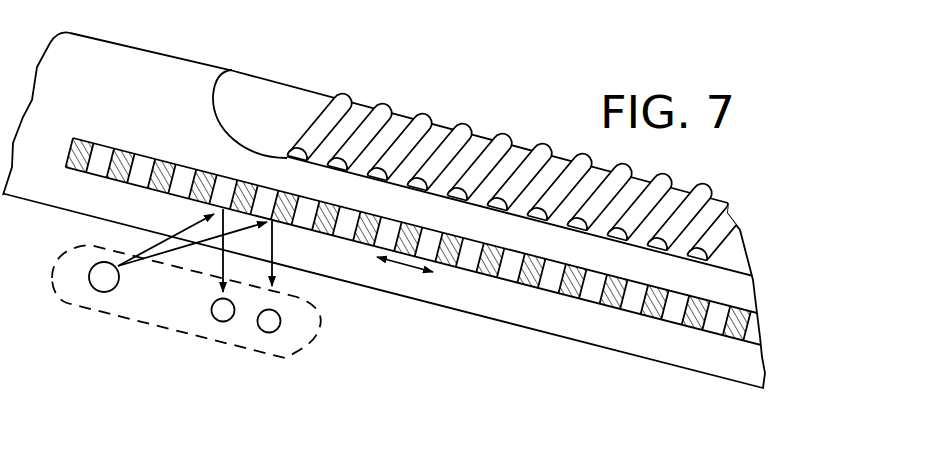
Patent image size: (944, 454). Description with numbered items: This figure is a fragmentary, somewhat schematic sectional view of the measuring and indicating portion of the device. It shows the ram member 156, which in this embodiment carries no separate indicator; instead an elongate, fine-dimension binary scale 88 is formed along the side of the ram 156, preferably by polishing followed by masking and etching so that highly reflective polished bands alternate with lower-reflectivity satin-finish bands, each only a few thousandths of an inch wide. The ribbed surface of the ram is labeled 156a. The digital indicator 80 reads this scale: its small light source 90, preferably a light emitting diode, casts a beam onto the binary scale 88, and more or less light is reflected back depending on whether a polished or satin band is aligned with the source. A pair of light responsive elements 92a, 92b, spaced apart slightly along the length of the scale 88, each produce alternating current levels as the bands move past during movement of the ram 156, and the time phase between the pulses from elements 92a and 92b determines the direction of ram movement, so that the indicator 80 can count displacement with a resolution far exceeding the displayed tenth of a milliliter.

The ram member 156 is at (183, 85).
The ribs 156a is at (445, 120).
The binary scale 88 is at (583, 351).
The digital indicator 80 is at (334, 326).
The light source 90 is at (140, 260).
The light responsive element 92a is at (216, 318).
The light responsive element 92b is at (272, 333).